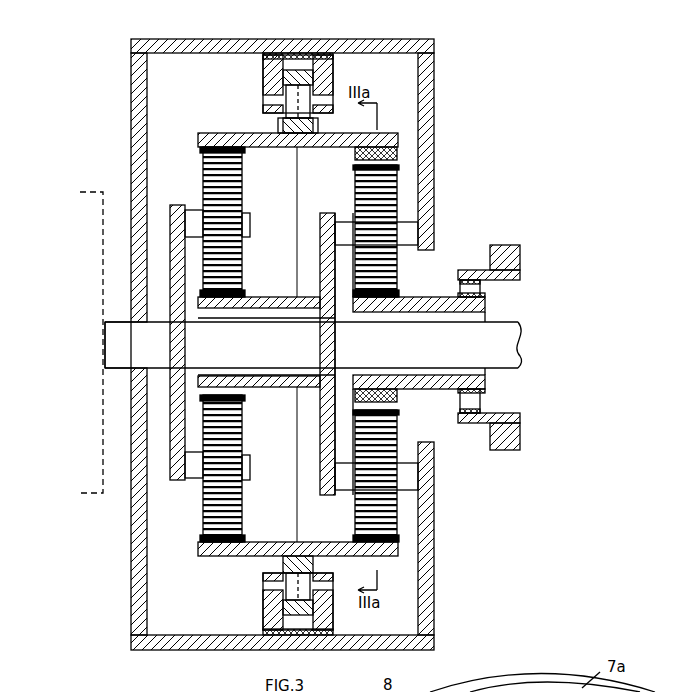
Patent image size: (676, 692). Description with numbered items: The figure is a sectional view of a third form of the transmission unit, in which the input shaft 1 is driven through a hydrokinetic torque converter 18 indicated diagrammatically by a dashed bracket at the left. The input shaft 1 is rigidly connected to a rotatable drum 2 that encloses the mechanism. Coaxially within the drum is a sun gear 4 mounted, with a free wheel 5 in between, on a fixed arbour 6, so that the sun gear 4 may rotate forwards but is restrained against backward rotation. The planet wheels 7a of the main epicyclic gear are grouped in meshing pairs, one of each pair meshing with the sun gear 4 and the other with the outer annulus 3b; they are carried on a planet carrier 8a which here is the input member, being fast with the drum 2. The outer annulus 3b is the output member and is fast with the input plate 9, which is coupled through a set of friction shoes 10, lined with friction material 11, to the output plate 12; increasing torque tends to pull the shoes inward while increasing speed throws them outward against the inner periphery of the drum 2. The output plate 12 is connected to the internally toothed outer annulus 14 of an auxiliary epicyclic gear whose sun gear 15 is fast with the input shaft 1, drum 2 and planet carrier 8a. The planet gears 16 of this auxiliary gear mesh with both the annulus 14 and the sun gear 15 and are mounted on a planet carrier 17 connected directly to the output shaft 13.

The input shaft 1 is at (108, 318).
The rotatable drum 2 is at (297, 46).
The outer annulus 3b is at (398, 152).
The sun gear 4 is at (400, 398).
The free wheel 5 is at (475, 288).
The fixed arbour 6 is at (520, 418).
The planet wheels 7a is at (385, 186).
The planet carrier 8a is at (425, 153).
The input plate 9 is at (313, 130).
The friction shoes 10 is at (333, 83).
The friction material 11 is at (275, 53).
The output plate 12 is at (283, 128).
The output shaft 13 is at (512, 337).
The internally toothed outer annulus 14 is at (200, 147).
The sun gear 15 is at (245, 297).
The planet gears 16 is at (215, 175).
The planet carrier 17 is at (172, 448).
The hydrokinetic torque converter 18 is at (90, 203).